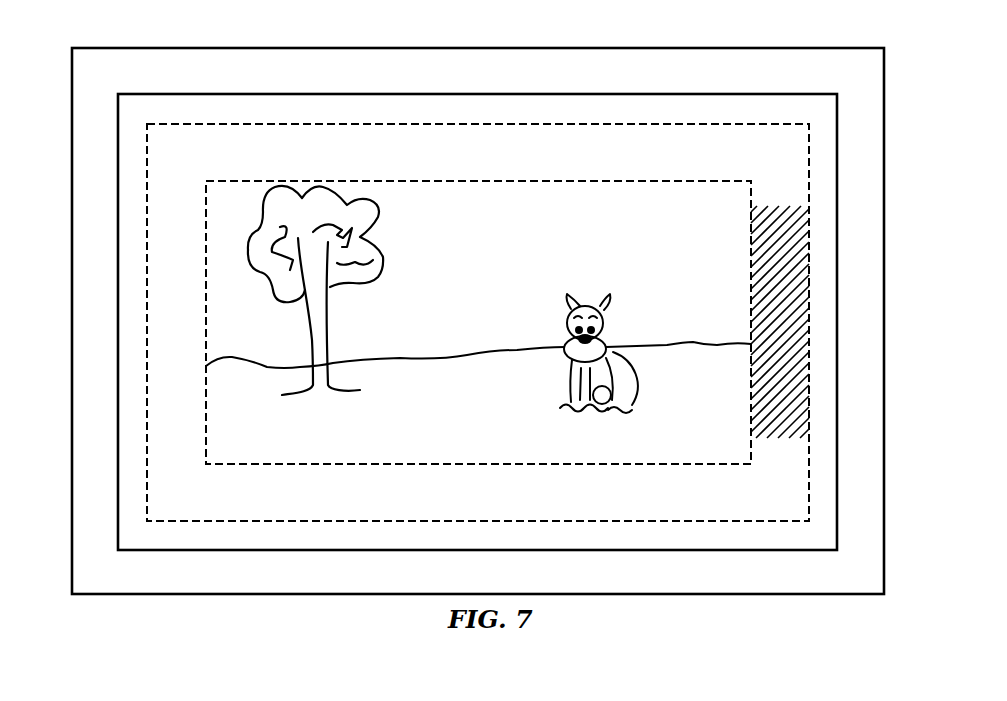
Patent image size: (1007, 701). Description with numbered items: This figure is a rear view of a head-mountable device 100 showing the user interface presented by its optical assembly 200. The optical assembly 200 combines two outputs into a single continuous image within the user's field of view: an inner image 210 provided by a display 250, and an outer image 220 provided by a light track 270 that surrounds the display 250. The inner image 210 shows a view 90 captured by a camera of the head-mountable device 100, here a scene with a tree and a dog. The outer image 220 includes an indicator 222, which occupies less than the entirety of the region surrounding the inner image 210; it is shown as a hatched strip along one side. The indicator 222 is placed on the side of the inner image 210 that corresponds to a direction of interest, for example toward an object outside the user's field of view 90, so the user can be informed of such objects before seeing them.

The head-mountable device 100 is at (110, 15).
The optical assembly 200 is at (564, 94).
The outer image 220 is at (695, 133).
The light track 270 is at (614, 124).
The display 250 is at (227, 181).
The inner image 210 is at (302, 198).
The view 90 is at (630, 268).
The indicator 222 is at (777, 290).